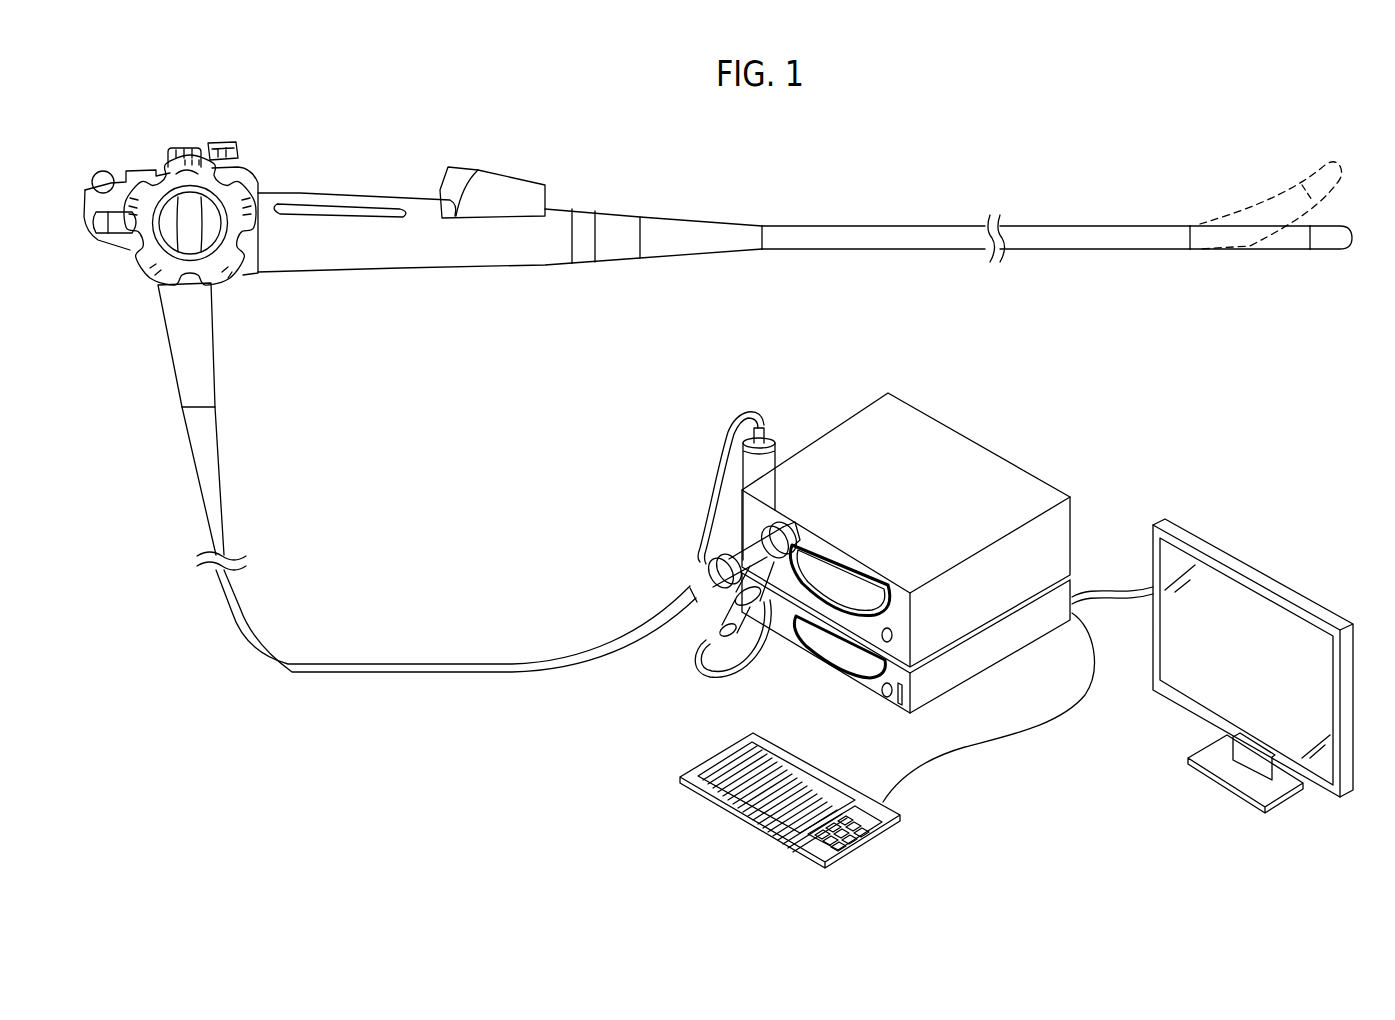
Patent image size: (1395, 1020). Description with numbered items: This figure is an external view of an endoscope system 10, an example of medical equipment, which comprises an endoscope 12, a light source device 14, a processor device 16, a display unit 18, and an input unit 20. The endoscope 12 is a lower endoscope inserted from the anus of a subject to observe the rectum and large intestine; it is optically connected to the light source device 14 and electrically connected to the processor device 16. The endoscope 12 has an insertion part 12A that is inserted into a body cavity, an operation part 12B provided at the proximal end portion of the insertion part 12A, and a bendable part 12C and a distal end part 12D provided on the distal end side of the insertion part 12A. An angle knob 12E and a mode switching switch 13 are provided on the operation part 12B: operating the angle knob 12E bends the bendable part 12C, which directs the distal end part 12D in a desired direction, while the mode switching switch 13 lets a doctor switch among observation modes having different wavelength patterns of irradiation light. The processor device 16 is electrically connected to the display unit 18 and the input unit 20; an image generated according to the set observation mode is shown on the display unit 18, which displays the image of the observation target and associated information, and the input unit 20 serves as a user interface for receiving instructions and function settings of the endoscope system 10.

The endoscope system 10 is at (519, 789).
The endoscope 12 is at (708, 212).
The insertion part 12A is at (922, 218).
The operation part 12B is at (420, 268).
The bendable part 12C is at (1248, 251).
The distal end part 12D is at (1328, 251).
The angle knob 12E is at (192, 175).
The mode switching switch 13 is at (141, 167).
The light source device 14 is at (962, 455).
The processor device 16 is at (942, 677).
The display unit 18 is at (1262, 580).
The input unit 20 is at (765, 816).